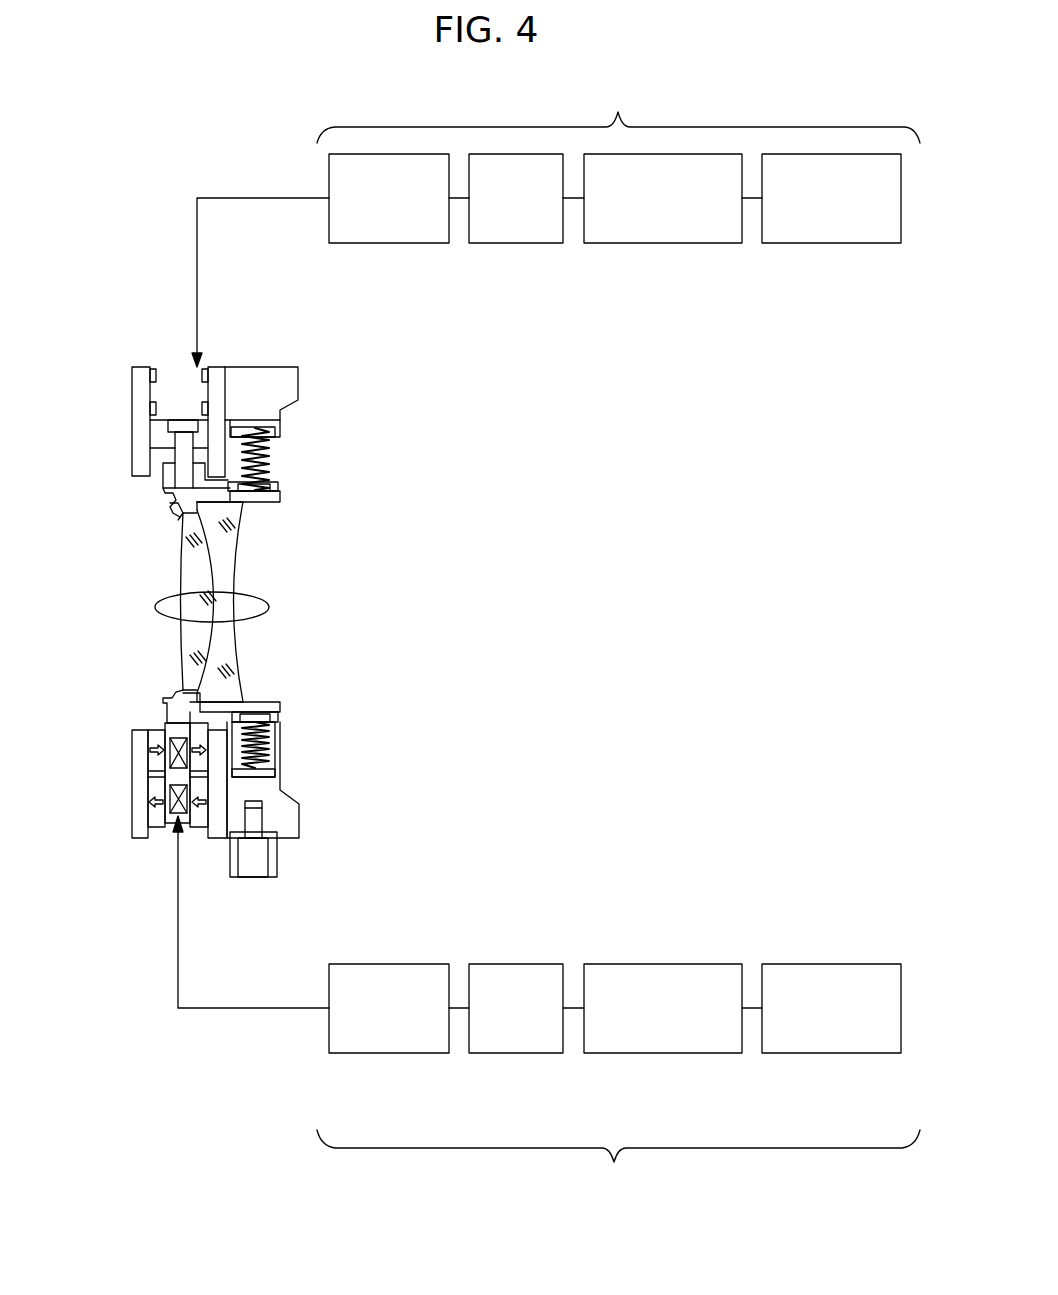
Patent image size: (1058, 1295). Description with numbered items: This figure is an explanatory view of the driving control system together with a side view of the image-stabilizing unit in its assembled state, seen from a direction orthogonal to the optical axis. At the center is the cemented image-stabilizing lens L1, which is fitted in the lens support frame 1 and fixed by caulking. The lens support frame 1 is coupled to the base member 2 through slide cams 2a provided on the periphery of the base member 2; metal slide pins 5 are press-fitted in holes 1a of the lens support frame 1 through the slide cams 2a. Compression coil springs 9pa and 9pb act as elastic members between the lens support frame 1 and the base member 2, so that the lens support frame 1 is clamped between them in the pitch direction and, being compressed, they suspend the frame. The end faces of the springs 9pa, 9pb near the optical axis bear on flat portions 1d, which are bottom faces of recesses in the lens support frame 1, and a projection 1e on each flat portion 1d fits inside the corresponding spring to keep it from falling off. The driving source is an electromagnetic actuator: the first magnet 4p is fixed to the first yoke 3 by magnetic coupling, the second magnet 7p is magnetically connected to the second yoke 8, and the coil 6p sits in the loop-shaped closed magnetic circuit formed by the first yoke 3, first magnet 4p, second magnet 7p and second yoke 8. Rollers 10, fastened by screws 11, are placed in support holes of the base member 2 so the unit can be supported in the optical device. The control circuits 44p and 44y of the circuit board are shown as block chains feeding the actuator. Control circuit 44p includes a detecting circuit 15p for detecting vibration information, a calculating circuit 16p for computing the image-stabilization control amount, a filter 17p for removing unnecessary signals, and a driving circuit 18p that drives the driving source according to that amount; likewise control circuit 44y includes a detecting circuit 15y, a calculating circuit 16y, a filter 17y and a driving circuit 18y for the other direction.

The lens support frame 1 is at (172, 698).
The hole 1a is at (168, 496).
The flat portion 1d is at (272, 502).
The projection 1e is at (273, 487).
The base member 2 is at (272, 374).
The slide cam 2a is at (170, 428).
The first yoke 3 is at (212, 372).
The slide pin 5 is at (180, 471).
The coil 6p is at (150, 745).
The second magnet 7p is at (160, 830).
The first magnet 4p is at (187, 825).
The second yoke 8 is at (141, 372).
The compression coil spring 9pa is at (267, 758).
The compression coil spring 9pb is at (267, 452).
The roller 10 is at (276, 867).
The screw 11 is at (255, 843).
The image-stabilizing lens L1 is at (286, 605).
The detecting circuit 15y is at (831, 243).
The calculating circuit 16y is at (655, 243).
The filter 17y is at (513, 243).
The driving circuit 18y is at (388, 243).
The control circuit 44y is at (618, 113).
The detecting circuit 15p is at (831, 1053).
The calculating circuit 16p is at (655, 1053).
The filter 17p is at (513, 1053).
The driving circuit 18p is at (388, 1053).
The control circuit 44p is at (618, 1163).